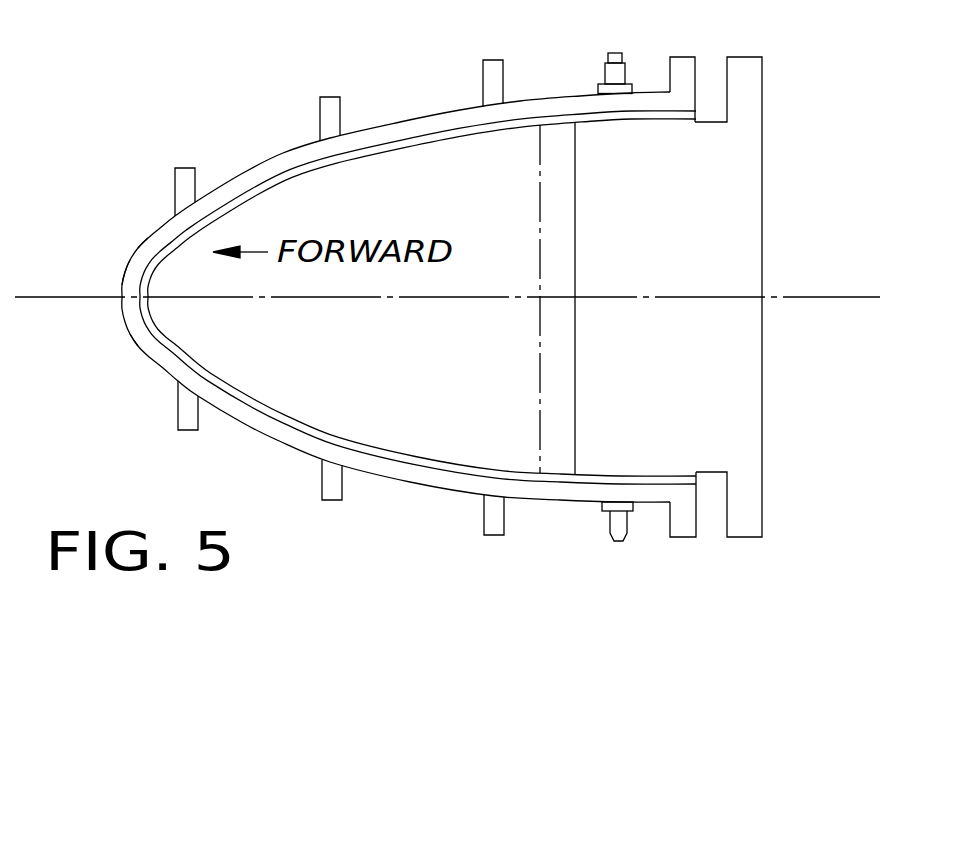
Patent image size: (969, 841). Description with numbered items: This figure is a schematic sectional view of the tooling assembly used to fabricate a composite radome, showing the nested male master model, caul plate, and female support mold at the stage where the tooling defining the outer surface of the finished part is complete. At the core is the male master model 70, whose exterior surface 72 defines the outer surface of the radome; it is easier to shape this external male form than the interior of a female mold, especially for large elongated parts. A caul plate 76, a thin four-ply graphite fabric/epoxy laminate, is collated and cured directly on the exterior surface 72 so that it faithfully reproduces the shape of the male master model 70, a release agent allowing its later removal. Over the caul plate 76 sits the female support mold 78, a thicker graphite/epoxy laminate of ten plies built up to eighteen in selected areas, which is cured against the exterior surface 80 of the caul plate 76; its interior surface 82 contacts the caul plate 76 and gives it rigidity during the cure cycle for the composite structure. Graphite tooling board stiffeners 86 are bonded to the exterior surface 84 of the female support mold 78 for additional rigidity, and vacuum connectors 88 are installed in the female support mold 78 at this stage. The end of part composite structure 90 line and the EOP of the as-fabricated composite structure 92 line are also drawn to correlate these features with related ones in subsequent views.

The male master model 70 is at (762, 142).
The exterior surface 72 is at (428, 135).
The caul plate 76 is at (300, 167).
The female support mold 78 is at (157, 232).
The exterior surface 80 is at (152, 268).
The interior surface 82 is at (140, 287).
The exterior surface 84 is at (140, 345).
The graphite tooling board stiffeners 86 is at (183, 168).
The vacuum connectors 88 is at (608, 62).
The end of part composite structure line 90 is at (540, 340).
The EOP of the as-fabricated composite structure line 92 is at (575, 252).